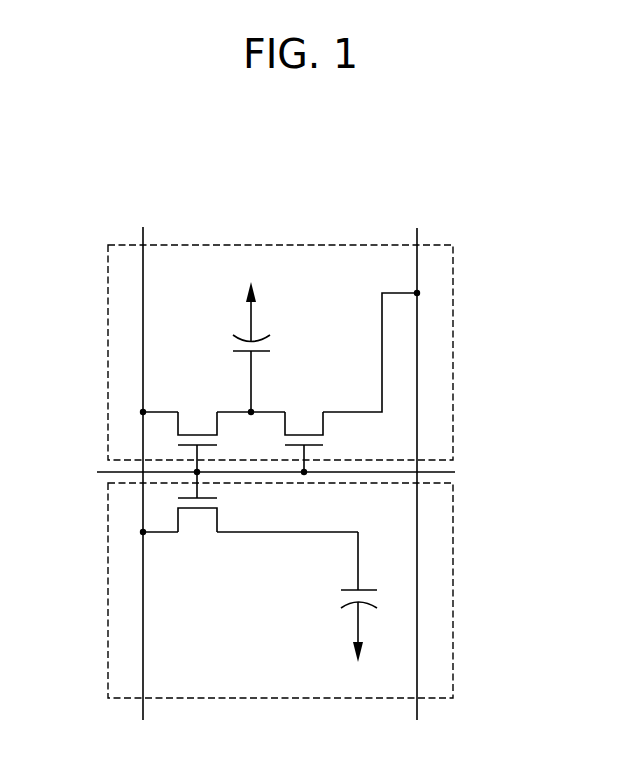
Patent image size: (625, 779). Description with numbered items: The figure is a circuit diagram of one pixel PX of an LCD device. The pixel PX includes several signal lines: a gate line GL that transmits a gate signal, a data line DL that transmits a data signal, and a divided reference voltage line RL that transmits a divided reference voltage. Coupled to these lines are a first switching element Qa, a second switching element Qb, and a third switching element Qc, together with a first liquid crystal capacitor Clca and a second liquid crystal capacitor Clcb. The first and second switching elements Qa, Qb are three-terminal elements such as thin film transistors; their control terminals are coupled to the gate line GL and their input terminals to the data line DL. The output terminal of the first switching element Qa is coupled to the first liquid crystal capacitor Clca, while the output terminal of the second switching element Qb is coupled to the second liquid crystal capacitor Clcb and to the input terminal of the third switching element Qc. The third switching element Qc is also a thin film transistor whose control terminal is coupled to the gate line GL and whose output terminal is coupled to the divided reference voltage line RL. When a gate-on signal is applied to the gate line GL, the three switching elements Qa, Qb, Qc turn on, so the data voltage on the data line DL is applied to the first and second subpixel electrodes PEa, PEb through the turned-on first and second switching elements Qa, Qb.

The pixel PX is at (76, 230).
The data line DL is at (145, 460).
The divided reference voltage line RL is at (417, 460).
The gate line GL is at (261, 472).
The first subpixel electrode PEa is at (454, 592).
The second subpixel electrode PEb is at (453, 352).
The first switching element Qa is at (197, 515).
The second switching element Qb is at (197, 430).
The third switching element Qc is at (304, 430).
The first liquid crystal capacitor Clca is at (333, 597).
The second liquid crystal capacitor Clcb is at (276, 347).